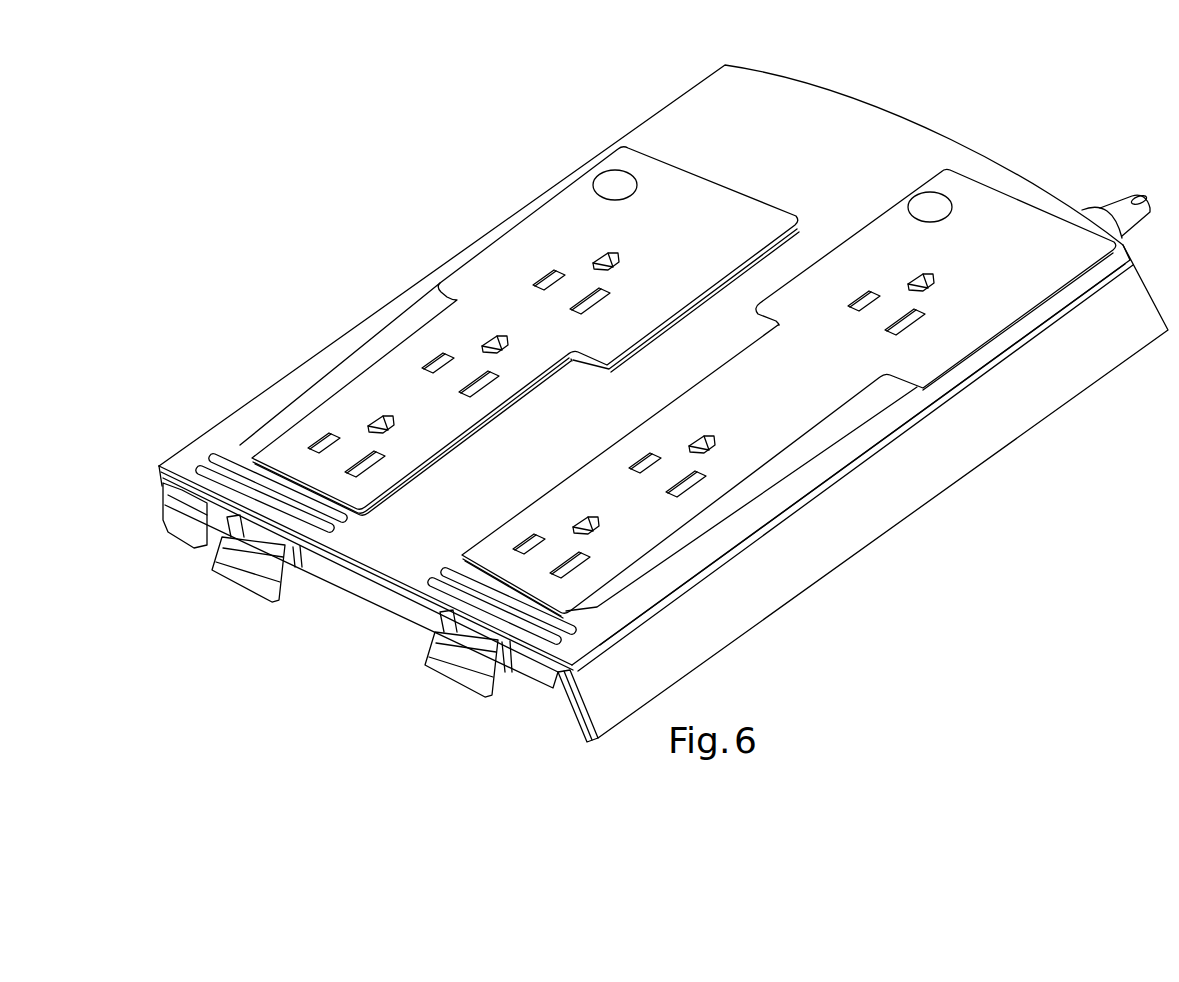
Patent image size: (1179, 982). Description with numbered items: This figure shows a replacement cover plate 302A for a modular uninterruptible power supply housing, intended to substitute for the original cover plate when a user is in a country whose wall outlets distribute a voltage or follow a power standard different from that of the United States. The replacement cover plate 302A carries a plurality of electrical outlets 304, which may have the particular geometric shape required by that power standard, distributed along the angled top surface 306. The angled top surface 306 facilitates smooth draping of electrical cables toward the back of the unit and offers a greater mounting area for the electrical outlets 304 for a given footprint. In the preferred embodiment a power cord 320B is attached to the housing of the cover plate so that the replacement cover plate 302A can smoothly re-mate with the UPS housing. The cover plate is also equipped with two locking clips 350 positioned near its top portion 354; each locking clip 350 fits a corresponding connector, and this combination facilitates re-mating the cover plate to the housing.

The replacement cover plate 302A is at (276, 269).
The electrical outlets 304 is at (383, 452).
The angled top surface 306 is at (519, 452).
The power cord 320B is at (1112, 205).
The locking clips 350 is at (265, 590).
The top portion 354 is at (378, 603).